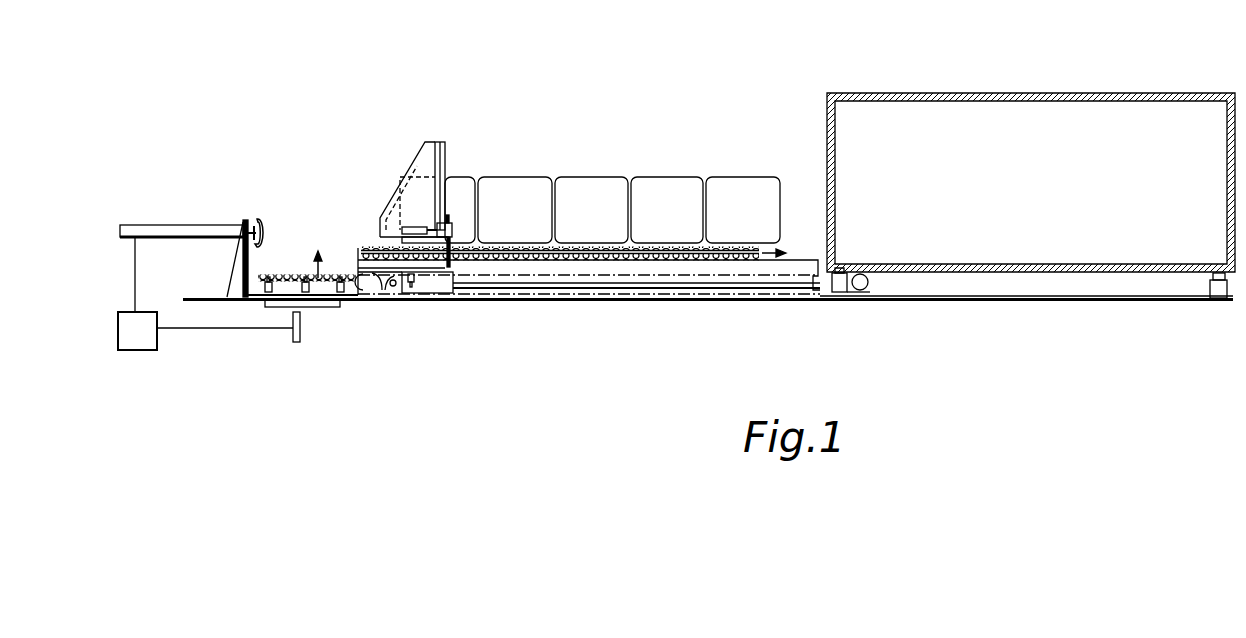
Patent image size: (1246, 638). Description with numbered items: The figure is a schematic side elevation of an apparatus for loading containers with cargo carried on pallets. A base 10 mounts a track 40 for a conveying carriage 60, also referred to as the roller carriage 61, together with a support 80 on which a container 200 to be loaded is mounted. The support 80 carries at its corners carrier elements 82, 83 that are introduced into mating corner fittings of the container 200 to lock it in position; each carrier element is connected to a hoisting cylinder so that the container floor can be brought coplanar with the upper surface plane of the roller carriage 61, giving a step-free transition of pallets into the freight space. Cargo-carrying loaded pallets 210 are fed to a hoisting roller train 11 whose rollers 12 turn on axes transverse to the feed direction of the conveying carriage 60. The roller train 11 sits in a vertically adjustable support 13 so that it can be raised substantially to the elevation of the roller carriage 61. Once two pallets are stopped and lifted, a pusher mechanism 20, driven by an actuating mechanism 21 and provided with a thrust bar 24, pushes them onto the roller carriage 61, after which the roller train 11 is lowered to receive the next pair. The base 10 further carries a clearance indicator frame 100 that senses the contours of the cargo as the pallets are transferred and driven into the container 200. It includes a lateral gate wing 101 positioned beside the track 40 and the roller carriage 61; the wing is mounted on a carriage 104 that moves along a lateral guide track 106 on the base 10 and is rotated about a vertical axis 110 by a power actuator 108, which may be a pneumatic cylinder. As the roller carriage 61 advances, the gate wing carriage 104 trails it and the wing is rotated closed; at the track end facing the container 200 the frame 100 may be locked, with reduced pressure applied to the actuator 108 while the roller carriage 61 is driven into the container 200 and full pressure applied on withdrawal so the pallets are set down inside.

The base 10 is at (723, 296).
The hoisting roller train 11 is at (334, 275).
The rollers 12 is at (290, 275).
The vertically adjustable support 13 is at (345, 297).
The pusher mechanism 20 is at (184, 225).
The actuating mechanism 21 is at (156, 238).
The thrust bar 24 is at (263, 222).
The track 40 is at (799, 267).
The conveying carriage 60 is at (592, 248).
The roller carriage 61 is at (647, 258).
The support 80 is at (1003, 301).
The carrier element 82 is at (836, 294).
The carrier element 83 is at (1214, 283).
The clearance indicator frame 100 is at (434, 142).
The gate wing 101 is at (388, 219).
The carriage 104 is at (430, 292).
The guide track 106 is at (552, 284).
The power actuator 108 is at (409, 228).
The vertical axis 110 is at (449, 262).
The container 200 is at (1018, 93).
The loaded pallets 210 is at (720, 188).